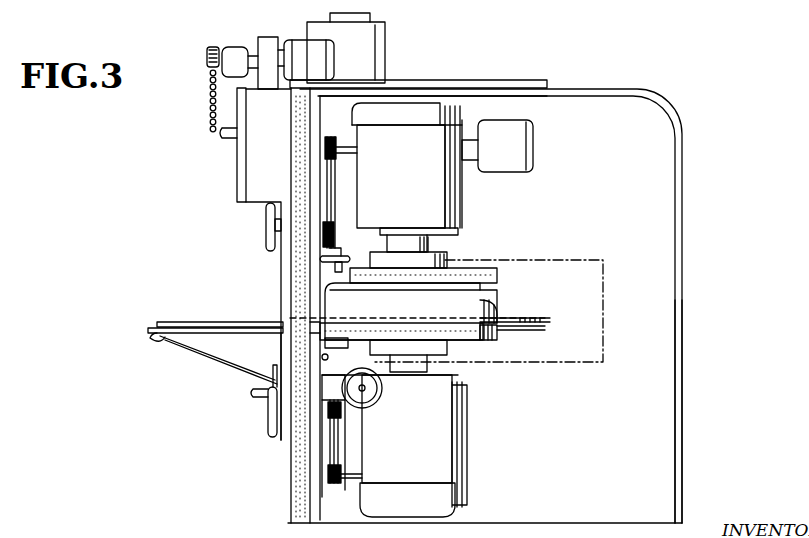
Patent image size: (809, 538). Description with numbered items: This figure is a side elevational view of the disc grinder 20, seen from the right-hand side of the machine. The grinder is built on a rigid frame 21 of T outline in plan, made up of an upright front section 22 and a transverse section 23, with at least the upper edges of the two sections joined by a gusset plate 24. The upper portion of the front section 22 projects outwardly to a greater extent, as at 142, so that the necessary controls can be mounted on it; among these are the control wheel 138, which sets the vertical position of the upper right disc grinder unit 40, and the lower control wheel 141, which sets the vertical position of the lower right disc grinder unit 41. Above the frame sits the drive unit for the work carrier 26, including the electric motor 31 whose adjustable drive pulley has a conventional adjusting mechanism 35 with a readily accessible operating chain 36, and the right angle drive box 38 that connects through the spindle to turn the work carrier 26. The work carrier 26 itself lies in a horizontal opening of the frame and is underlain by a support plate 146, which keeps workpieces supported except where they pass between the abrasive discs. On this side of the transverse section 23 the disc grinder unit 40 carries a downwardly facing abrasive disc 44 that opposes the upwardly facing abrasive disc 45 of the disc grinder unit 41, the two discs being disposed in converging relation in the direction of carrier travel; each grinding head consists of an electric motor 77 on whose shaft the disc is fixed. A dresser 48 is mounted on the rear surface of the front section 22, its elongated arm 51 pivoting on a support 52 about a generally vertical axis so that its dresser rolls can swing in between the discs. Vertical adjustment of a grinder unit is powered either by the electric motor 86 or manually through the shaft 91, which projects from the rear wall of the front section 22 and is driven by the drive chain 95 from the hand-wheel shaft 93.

The disc grinder 20 is at (648, 86).
The rigid frame 21 is at (658, 416).
The front section 22 is at (290, 484).
The transverse section 23 is at (590, 106).
The gusset plate 24 is at (505, 80).
The work carrier 26 is at (203, 318).
The electric motor 31 is at (300, 44).
The adjusting mechanism 35 is at (237, 50).
The operating chain 36 is at (211, 106).
The right angle drive box 38 is at (372, 36).
The disc grinder unit 40 is at (463, 186).
The disc grinder unit 41 is at (468, 450).
The abrasive disc 44 is at (499, 277).
The abrasive disc 45 is at (490, 334).
The dresser 48 is at (492, 310).
The elongated arm 51 is at (452, 303).
The support 52 is at (325, 357).
The electric motor 77 is at (452, 210).
The electric motor 86 is at (520, 143).
The shaft 91 is at (341, 151).
The shaft 93 is at (332, 238).
The drive chain 95 is at (340, 196).
The control wheel 138 is at (267, 228).
The control wheel 141 is at (270, 420).
The outwardly projecting upper portion 142 is at (234, 175).
The support plate 146 is at (153, 329).